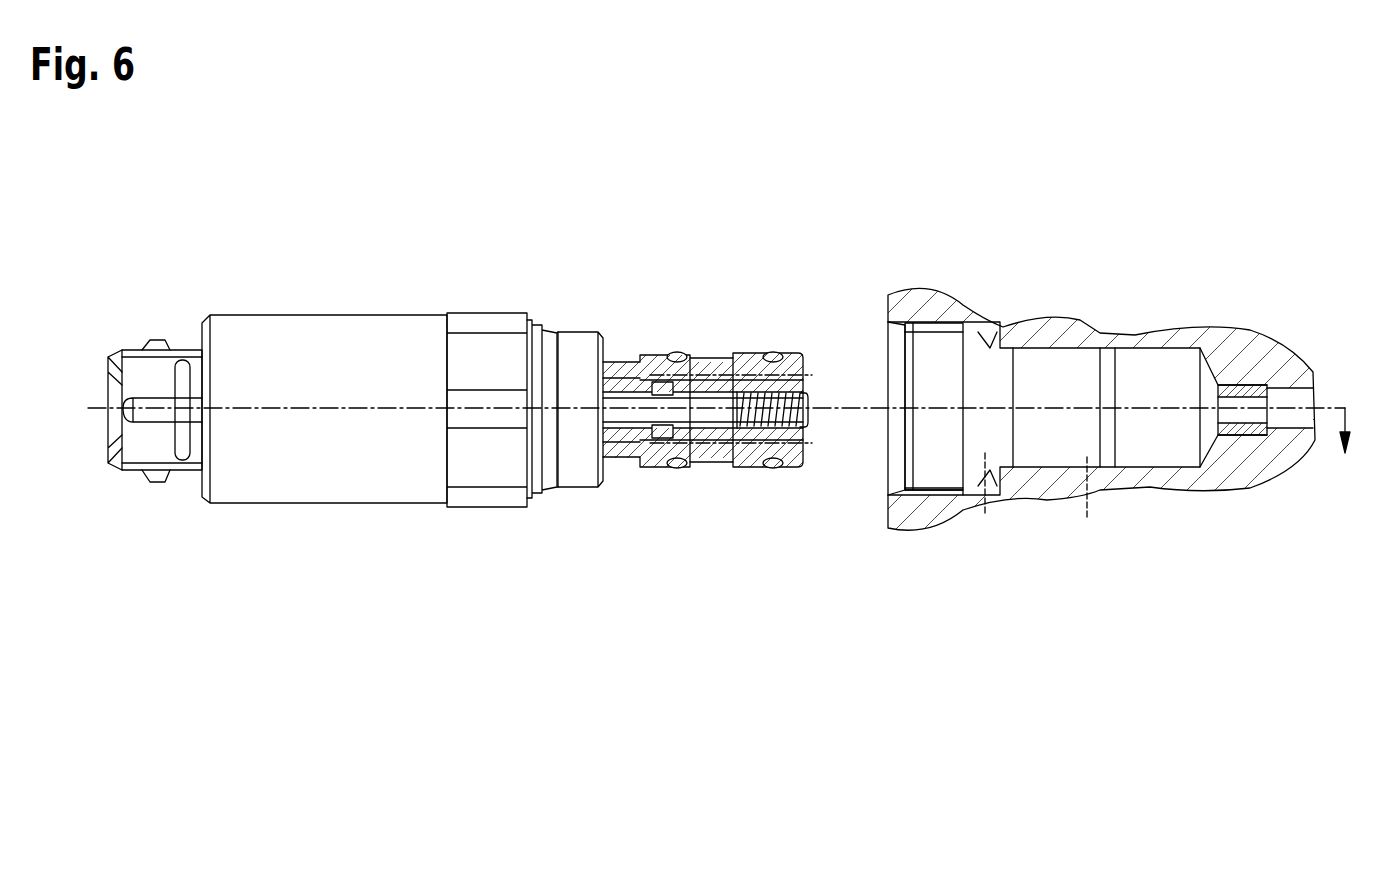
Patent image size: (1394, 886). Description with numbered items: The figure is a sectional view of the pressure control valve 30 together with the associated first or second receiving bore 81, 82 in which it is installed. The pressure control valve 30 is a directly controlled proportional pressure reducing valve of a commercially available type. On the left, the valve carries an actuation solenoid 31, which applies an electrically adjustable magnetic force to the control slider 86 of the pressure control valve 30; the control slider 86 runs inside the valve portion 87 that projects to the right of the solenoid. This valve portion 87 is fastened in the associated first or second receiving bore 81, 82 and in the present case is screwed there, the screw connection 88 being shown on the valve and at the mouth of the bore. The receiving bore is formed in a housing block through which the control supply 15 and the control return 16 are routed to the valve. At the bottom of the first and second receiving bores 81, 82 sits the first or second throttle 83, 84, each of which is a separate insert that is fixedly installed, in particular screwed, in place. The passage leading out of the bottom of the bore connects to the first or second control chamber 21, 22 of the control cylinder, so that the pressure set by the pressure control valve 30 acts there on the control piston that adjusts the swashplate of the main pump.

The actuation solenoid of the pressure control valve 31 is at (362, 333).
The screw connection 88 is at (582, 332).
The pressure control valve 30 is at (707, 350).
The valve portion 87 is at (645, 362).
The control slider of the pressure control valve 86 is at (695, 357).
The control supply 15 is at (1097, 493).
The control return 16 is at (997, 497).
The first receiving bore 81 is at (997, 359).
The second receiving bore 82 is at (988, 342).
The first throttle 83 is at (1236, 334).
The second throttle 84 is at (1237, 392).
The first control chamber 21 is at (1318, 447).
The second control chamber 22 is at (1318, 447).